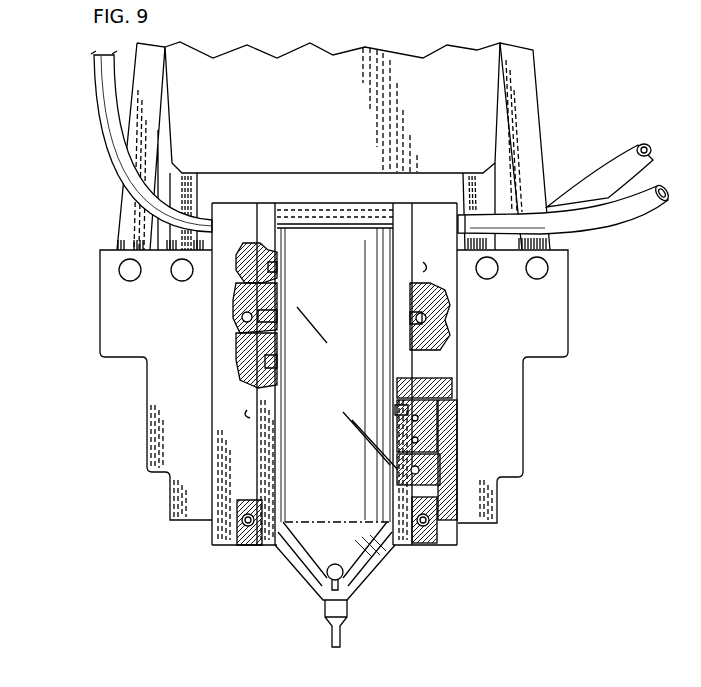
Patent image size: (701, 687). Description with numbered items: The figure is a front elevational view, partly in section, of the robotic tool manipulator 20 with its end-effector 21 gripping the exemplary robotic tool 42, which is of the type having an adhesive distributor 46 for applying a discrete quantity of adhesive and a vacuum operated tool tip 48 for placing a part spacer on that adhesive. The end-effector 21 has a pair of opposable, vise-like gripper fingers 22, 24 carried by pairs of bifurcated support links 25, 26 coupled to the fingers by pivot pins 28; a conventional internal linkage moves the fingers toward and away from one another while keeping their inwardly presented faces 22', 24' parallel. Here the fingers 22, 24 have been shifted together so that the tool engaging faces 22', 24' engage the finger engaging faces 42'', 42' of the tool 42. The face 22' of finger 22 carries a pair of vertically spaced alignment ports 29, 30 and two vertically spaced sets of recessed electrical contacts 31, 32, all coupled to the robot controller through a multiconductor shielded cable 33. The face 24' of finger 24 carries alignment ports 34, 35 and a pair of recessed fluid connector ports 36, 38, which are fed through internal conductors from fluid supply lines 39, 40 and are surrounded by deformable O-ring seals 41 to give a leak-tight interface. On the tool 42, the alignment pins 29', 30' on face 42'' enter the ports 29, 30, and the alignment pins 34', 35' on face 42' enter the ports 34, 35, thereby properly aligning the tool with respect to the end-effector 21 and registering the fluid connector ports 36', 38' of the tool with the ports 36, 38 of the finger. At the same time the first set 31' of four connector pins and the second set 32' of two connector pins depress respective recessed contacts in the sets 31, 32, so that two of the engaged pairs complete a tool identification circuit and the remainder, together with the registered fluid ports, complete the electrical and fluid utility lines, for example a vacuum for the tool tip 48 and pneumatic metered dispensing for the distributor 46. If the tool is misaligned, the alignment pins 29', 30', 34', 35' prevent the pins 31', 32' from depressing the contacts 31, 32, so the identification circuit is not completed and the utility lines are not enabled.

The robotic tool manipulator 20 is at (98, 364).
The end-effector 21 is at (403, 67).
The gripper finger 22 is at (220, 378).
The inwardly presented face of gripper finger 22' is at (230, 470).
The gripper finger 24 is at (460, 382).
The inwardly presented tool engaging face of finger 24' is at (460, 423).
The bifurcated support links 25 is at (117, 216).
The bifurcated support links 26 is at (530, 172).
The pivot pins 28 is at (138, 280).
The alignment port 29 is at (208, 308).
The alignment pin 29' is at (295, 305).
The alignment port 30 is at (236, 539).
The alignment pin 30' is at (287, 509).
The first set of recessed electrical contacts 31 is at (224, 277).
The first set of electrical connector pins 31' is at (298, 262).
The second set of recessed electrical contacts 32 is at (227, 357).
The second set of electrical connector pins 32' is at (298, 374).
The multiconductor shielded cable 33 is at (108, 139).
The alignment port 34 is at (452, 316).
The alignment pin 34' is at (377, 325).
The alignment port 35 is at (432, 544).
The alignment pin 35' is at (380, 505).
The fluid connector port 36 is at (447, 377).
The fluid connector port 36' is at (370, 383).
The fluid connector port 38 is at (453, 467).
The fluid connector port 38' is at (378, 471).
The fluid supply line 39 is at (607, 216).
The fluid supply line 40 is at (636, 153).
The O-ring seals 41 is at (405, 424).
The robotic tool 42 is at (340, 365).
The finger engaging face of tool 42' is at (383, 254).
The finger engaging face of tool 42'' is at (293, 404).
The adhesive distributor 46 is at (320, 557).
The vacuum operated tool tip 48 is at (342, 636).